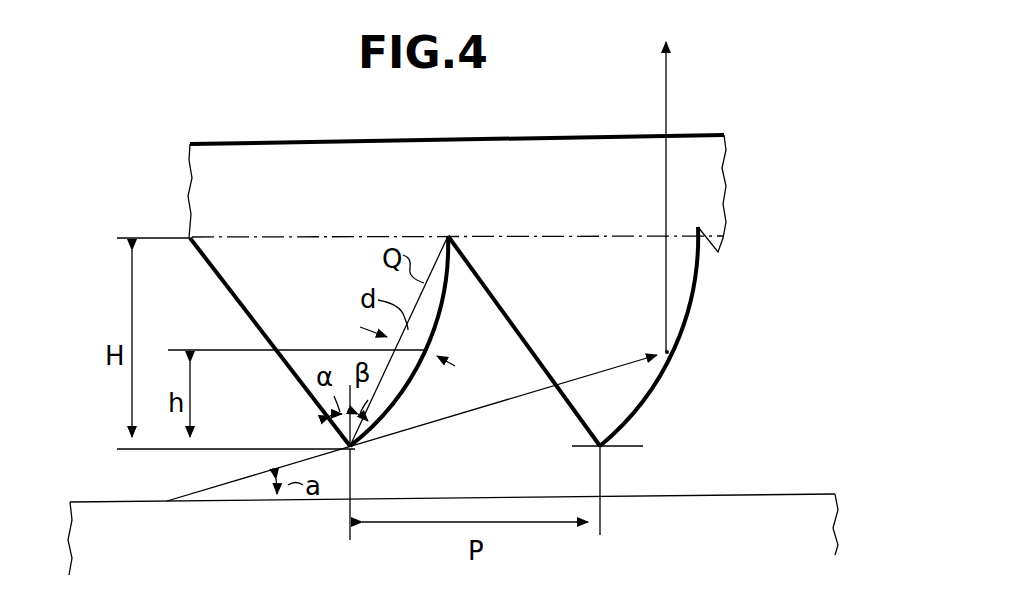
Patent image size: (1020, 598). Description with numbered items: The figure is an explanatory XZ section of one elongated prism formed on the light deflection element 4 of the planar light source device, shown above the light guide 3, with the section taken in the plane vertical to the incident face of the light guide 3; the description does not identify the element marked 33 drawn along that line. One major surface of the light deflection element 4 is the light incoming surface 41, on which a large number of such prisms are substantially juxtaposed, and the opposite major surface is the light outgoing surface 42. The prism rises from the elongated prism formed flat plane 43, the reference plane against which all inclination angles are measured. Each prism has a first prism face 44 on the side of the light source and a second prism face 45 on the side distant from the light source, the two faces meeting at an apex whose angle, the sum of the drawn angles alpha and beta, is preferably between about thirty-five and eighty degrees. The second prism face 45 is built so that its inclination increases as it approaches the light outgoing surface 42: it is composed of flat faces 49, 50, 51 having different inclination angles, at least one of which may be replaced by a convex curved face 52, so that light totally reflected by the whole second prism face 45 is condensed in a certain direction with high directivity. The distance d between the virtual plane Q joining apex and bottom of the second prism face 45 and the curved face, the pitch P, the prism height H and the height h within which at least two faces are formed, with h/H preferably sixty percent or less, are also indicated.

The light guide 3 is at (100, 492).
The light deflection element 4 is at (708, 116).
The workpiece surface 33 is at (797, 494).
The light incoming surface 41 is at (287, 403).
The light outgoing surface 42 is at (311, 141).
The elongated prism formed flat plane 43 is at (317, 233).
The first prism face 44 is at (230, 292).
The second prism face 45 is at (395, 410).
The flat face 49 is at (612, 432).
The flat face 50 is at (644, 402).
The flat face 51 is at (672, 356).
The convex curved face 52 is at (693, 279).